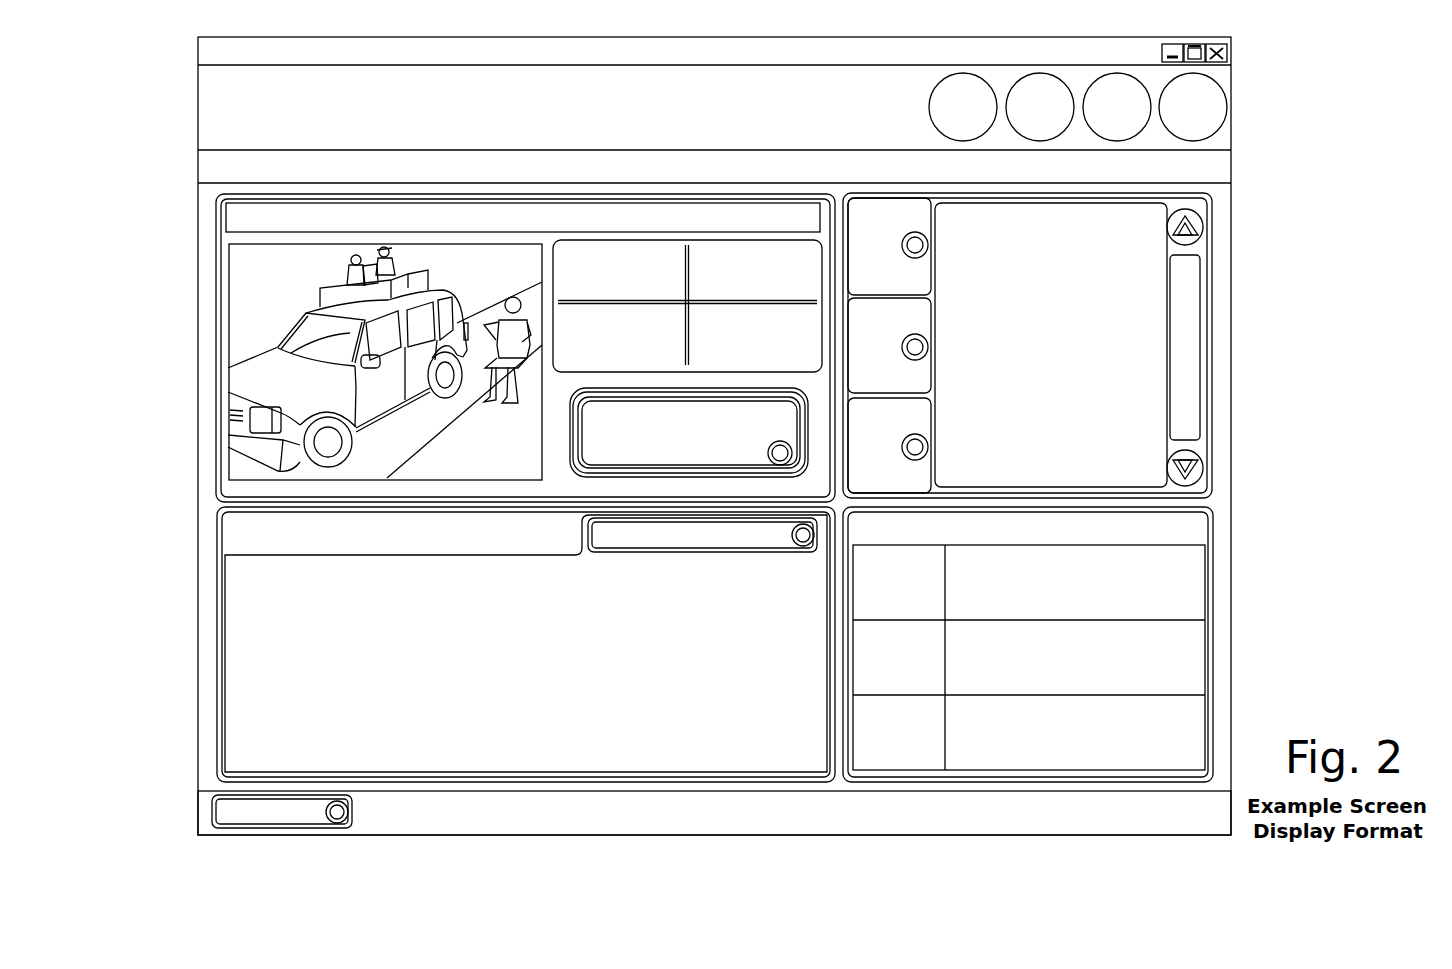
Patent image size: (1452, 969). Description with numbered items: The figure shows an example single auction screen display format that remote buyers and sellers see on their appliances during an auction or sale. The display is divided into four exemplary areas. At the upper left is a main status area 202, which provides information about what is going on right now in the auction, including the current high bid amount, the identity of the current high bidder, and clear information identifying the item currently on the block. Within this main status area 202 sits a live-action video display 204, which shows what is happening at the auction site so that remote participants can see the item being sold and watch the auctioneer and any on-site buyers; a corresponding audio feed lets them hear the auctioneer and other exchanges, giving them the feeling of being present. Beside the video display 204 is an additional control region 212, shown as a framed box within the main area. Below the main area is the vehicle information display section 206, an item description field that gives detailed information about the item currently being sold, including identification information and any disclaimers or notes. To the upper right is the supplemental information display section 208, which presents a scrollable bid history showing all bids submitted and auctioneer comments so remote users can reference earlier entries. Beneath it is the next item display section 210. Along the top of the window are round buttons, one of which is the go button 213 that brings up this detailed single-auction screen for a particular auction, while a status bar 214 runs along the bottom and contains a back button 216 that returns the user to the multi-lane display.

The main status area 202 is at (500, 195).
The live-action video display 204 is at (240, 318).
The vehicle information display section 206 is at (480, 675).
The supplemental information display section 208 is at (1040, 368).
The next item display section 210 is at (1058, 600).
The control box 212 is at (668, 443).
The go button 213 is at (1000, 72).
The status bar 214 is at (691, 826).
The back button 216 is at (287, 832).